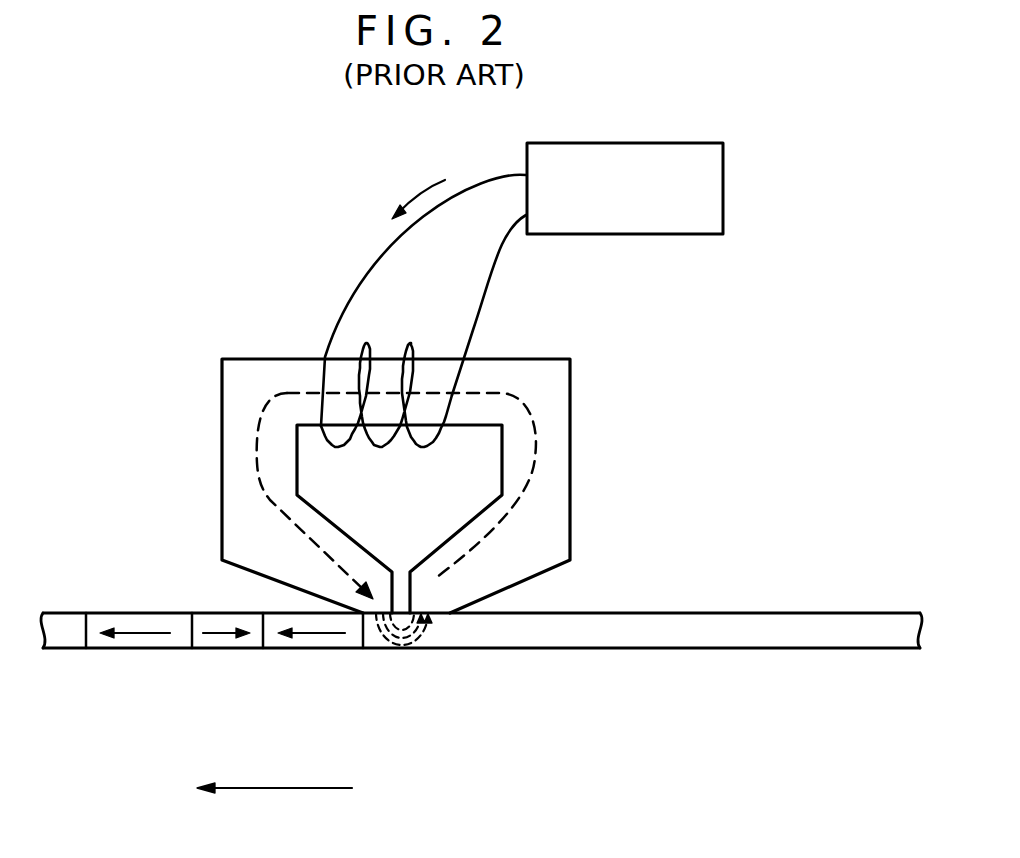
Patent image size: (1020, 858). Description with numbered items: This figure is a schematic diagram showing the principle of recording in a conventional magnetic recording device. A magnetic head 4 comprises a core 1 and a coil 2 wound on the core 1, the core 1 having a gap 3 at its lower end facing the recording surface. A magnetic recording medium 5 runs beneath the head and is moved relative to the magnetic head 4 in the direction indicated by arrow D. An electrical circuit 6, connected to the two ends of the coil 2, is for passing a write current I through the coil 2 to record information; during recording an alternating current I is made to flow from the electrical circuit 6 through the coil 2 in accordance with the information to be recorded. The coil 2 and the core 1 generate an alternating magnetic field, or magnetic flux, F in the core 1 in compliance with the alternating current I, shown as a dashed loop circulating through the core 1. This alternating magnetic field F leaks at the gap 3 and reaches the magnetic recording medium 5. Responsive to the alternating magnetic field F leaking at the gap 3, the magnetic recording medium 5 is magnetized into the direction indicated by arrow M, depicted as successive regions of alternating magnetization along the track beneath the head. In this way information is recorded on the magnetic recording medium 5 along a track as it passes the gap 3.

The core 1 is at (563, 525).
The coil 2 is at (473, 378).
The gap 3 is at (393, 571).
The magnetic head 4 is at (222, 383).
The magnetic recording medium 5 is at (832, 634).
The electrical circuit 6 is at (712, 222).
The alternating magnetic field F is at (533, 427).
The direction of magnetization M is at (300, 636).
The direction of movement D is at (256, 787).
The write current I is at (406, 207).